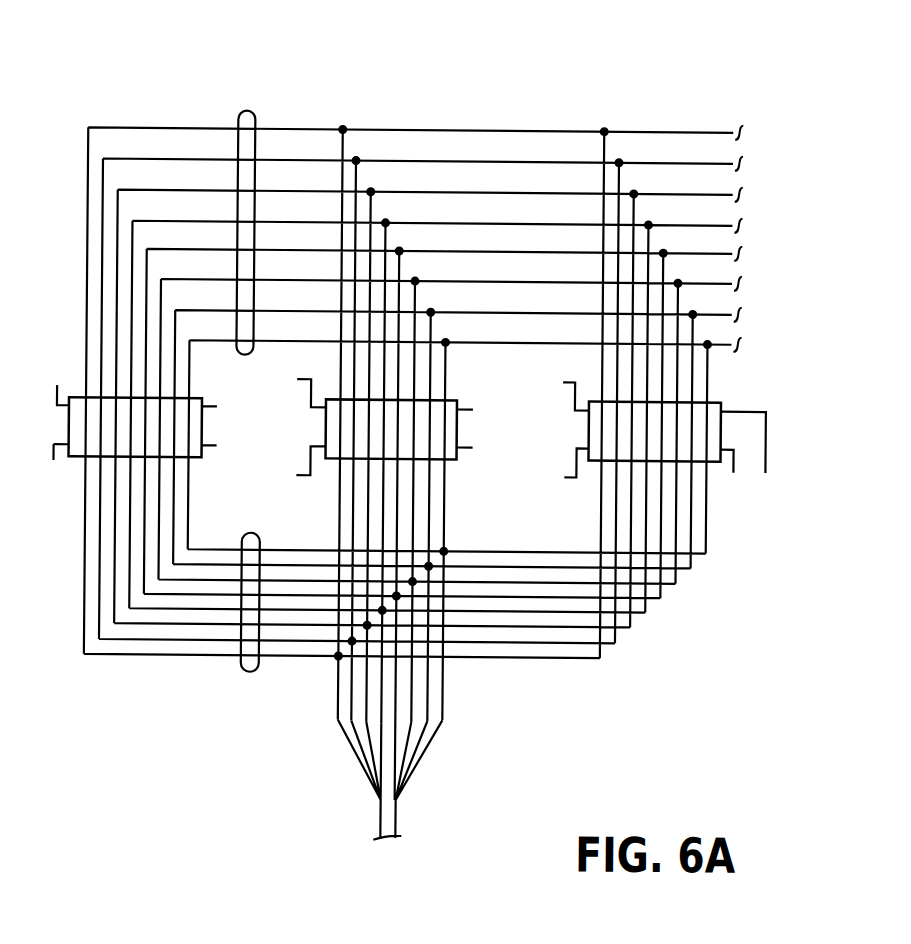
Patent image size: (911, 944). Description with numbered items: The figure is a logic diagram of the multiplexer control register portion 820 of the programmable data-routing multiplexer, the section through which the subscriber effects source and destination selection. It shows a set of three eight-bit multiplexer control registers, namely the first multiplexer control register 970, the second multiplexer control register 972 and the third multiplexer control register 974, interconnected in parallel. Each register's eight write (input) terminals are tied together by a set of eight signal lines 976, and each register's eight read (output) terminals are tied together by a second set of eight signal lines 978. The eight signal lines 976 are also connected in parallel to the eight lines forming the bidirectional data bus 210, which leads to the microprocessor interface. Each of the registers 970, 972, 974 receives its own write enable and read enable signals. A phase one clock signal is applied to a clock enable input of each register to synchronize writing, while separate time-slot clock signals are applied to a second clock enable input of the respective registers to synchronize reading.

The MCR1-3 portion 820 is at (690, 30).
The set of eight signal lines 978 is at (247, 113).
The set of eight signal lines 976 is at (253, 673).
The multiplexer control register MCR1 970 is at (142, 449).
The multiplexer control register MCR2 972 is at (393, 449).
The multiplexer control register MCR3 974 is at (652, 449).
The bidirectional DB7-0 bus 210 is at (399, 822).